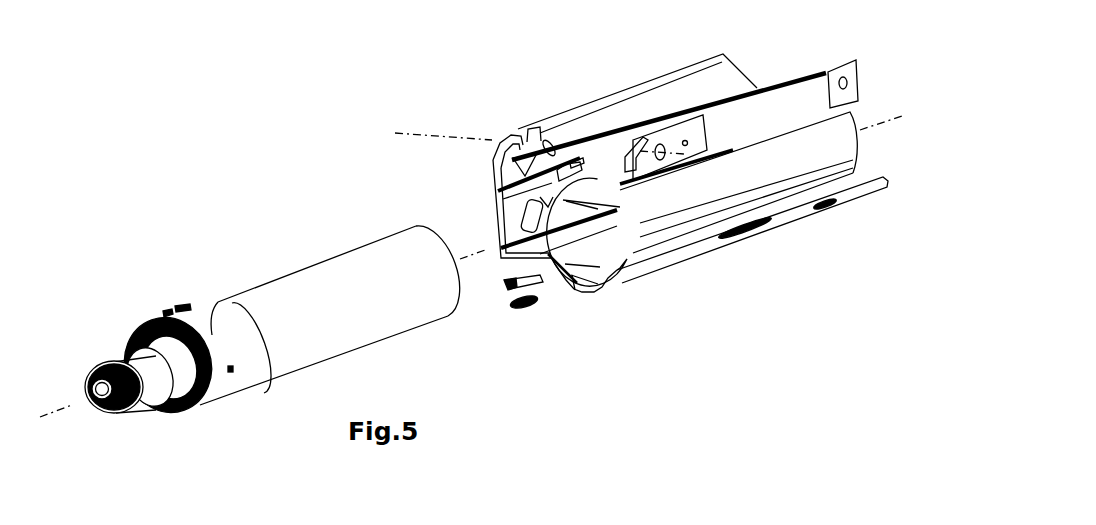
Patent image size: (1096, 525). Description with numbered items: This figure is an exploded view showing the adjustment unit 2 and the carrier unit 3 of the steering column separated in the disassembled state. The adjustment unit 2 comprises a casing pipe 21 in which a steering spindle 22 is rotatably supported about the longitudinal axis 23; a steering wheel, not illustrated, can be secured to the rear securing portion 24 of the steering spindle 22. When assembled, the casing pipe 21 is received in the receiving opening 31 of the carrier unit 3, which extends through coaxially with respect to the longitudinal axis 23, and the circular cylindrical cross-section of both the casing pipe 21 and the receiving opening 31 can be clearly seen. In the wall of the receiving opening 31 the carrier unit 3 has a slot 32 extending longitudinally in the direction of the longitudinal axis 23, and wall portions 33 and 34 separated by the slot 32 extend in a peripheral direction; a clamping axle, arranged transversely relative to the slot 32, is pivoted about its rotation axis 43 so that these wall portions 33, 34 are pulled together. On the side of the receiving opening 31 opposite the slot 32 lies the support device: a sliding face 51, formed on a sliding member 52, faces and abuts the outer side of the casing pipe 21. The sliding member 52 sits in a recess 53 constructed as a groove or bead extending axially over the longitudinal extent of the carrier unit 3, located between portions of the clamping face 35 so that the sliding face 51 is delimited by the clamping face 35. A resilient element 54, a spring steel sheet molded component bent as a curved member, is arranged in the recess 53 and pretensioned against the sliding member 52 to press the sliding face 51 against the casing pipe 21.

The adjustment unit 2 is at (299, 268).
The casing pipe 21 is at (368, 268).
The steering spindle 22 is at (163, 347).
The longitudinal axis 23 is at (480, 237).
The securing portion 24 is at (115, 355).
The carrier unit 3 is at (747, 183).
The receiving opening 31 is at (548, 205).
The slot 32 is at (576, 162).
The wall portion 33 is at (630, 210).
The wall portion 34 is at (557, 270).
The clamping face 35 is at (560, 177).
The rotation axis 43 is at (428, 133).
The sliding face 51 is at (508, 287).
The sliding member 52 is at (538, 285).
The recess 53 is at (590, 277).
The resilient element 54 is at (527, 307).